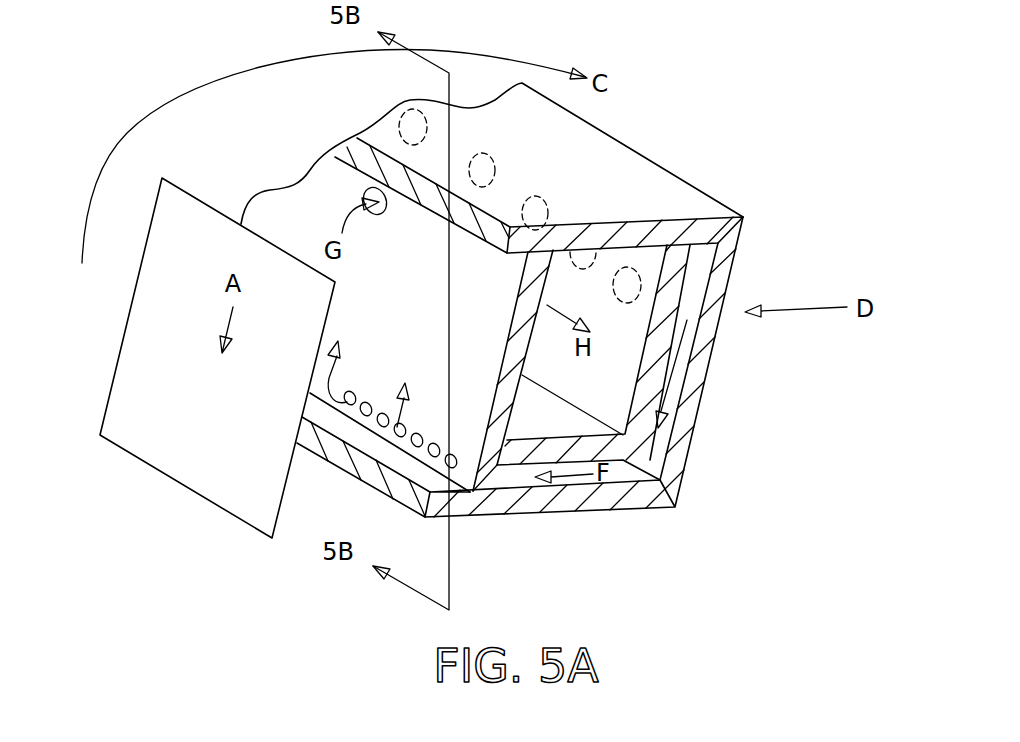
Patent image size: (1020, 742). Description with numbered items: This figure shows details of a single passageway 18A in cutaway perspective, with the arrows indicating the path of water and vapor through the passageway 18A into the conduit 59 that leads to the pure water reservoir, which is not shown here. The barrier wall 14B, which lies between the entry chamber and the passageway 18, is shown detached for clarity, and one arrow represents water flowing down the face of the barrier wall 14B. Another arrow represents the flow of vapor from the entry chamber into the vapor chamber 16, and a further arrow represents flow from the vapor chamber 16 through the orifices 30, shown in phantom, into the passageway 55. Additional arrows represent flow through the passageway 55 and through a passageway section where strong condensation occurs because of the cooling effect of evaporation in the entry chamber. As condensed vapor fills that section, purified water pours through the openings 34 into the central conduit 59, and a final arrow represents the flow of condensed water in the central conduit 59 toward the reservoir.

The barrier wall 14B is at (217, 358).
The vapor chamber 16 is at (864, 221).
The passageway 18 is at (180, 330).
The single passageway 18A is at (663, 165).
The orifices 30 is at (541, 198).
The openings 34 is at (373, 189).
The passageway 55 is at (647, 465).
The central conduit 59 is at (389, 306).